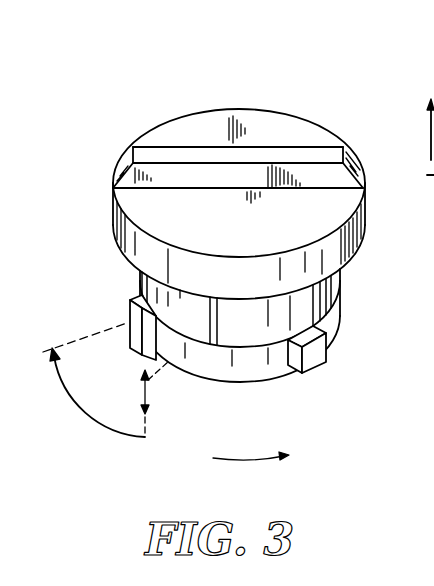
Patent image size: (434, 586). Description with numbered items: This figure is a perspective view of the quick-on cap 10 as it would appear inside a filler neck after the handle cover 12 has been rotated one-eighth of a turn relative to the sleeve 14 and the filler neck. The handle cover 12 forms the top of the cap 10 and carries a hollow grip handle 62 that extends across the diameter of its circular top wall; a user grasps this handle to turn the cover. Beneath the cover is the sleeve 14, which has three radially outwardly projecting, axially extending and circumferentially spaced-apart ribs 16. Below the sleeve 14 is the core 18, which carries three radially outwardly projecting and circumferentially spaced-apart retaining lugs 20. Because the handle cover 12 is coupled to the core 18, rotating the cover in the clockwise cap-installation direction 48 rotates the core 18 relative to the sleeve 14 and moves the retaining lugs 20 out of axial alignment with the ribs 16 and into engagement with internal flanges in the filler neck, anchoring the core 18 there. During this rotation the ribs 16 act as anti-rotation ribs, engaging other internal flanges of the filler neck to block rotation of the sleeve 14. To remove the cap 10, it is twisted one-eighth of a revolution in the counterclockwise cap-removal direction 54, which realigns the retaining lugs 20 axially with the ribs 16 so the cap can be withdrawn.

The quick-on cap 10 is at (131, 130).
The handle cover 12 is at (333, 132).
The hollow grip handle 62 is at (273, 158).
The sleeve 14 is at (137, 283).
The ribs 16 is at (332, 290).
The core 18 is at (212, 394).
The retaining lugs 20 is at (137, 336).
The cap-installation direction 48 is at (112, 422).
The cap-removal direction 54 is at (247, 457).